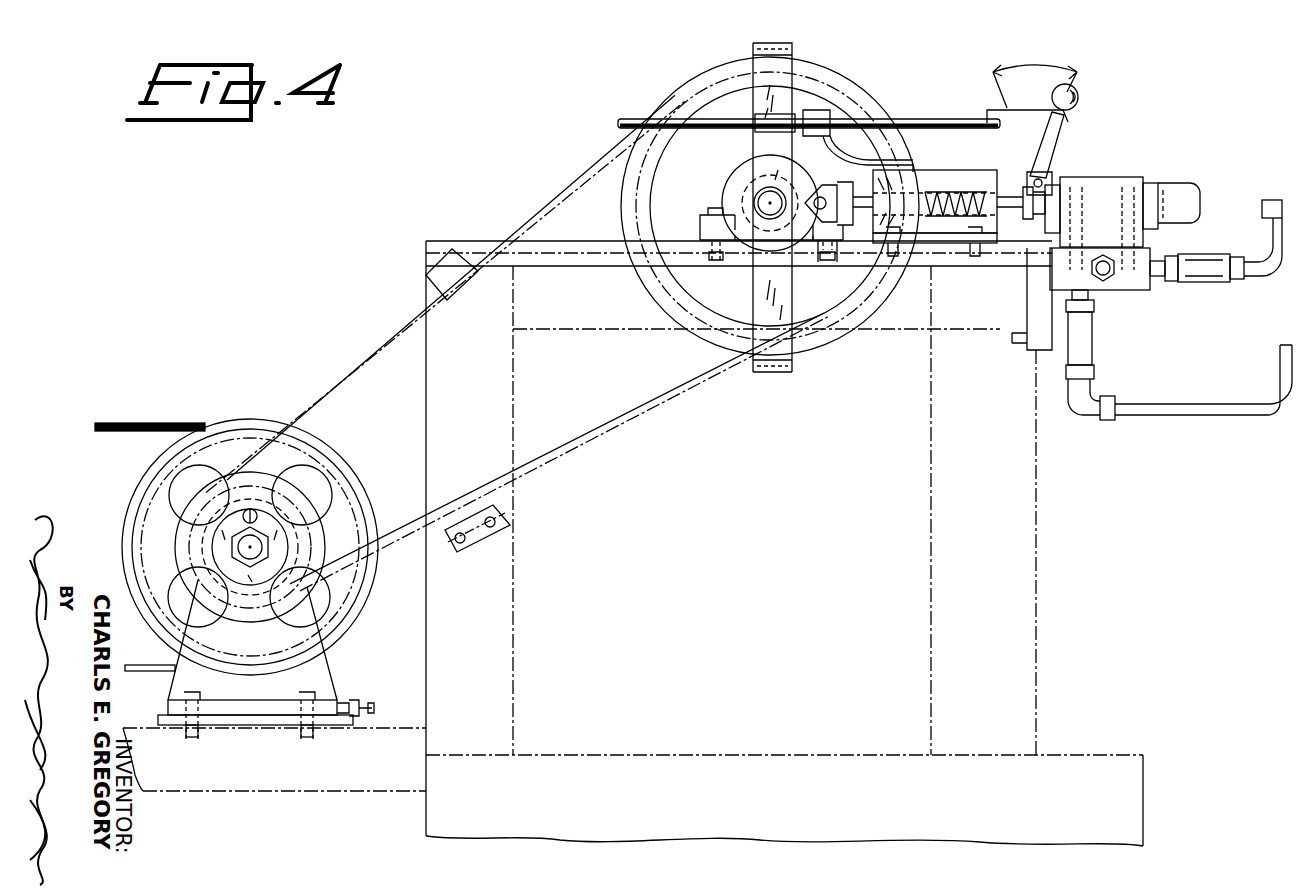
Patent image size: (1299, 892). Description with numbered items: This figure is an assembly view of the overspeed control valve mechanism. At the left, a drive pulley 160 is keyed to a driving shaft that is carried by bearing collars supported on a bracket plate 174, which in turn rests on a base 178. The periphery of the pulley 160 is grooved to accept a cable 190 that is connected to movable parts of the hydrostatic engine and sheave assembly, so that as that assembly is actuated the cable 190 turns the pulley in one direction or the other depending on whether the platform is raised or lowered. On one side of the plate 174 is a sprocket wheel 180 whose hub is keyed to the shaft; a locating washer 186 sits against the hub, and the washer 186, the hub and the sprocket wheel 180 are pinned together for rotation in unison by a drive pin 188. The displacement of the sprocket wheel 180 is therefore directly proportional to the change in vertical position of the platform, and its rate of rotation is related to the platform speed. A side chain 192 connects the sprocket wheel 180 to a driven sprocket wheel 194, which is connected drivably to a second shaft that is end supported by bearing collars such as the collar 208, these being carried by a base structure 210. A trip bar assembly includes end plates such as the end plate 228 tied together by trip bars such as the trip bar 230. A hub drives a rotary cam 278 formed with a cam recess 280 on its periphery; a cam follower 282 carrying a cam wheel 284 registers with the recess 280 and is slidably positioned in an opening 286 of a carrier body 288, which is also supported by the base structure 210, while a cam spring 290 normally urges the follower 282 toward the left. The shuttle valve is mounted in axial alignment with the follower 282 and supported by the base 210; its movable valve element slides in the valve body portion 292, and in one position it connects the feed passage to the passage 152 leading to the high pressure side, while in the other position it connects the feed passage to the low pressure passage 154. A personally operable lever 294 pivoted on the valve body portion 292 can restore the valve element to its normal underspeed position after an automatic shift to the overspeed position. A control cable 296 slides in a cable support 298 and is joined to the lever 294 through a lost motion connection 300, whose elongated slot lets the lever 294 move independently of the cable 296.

The passage 152 is at (1200, 404).
The low pressure passage 154 is at (1263, 216).
The drive pulley 160 is at (157, 466).
The bracket plate 174 is at (312, 668).
The base 178 is at (251, 714).
The sprocket wheel 180 is at (321, 547).
The locating washer 186 is at (238, 577).
The drive pin 188 is at (259, 515).
The cable 190 is at (160, 425).
The side chain 192 is at (598, 440).
The driven sprocket wheel 194 is at (697, 78).
The bearing collar 208 is at (745, 188).
The base structure 210 is at (963, 262).
The end plate 228 is at (767, 275).
The trip bar 230 is at (771, 43).
The rotary cam 278 is at (731, 185).
The cam recess 280 is at (836, 243).
The cam follower 282 is at (872, 250).
The cam wheel 284 is at (821, 183).
The opening 286 is at (935, 181).
The carrier body 288 is at (959, 233).
The cam spring 290 is at (968, 188).
The valve body portion 292 is at (1090, 236).
The personally operable lever 294 is at (1063, 148).
The control cable 296 is at (942, 126).
The cable support 298 is at (786, 118).
The lost motion connection 300 is at (1028, 110).